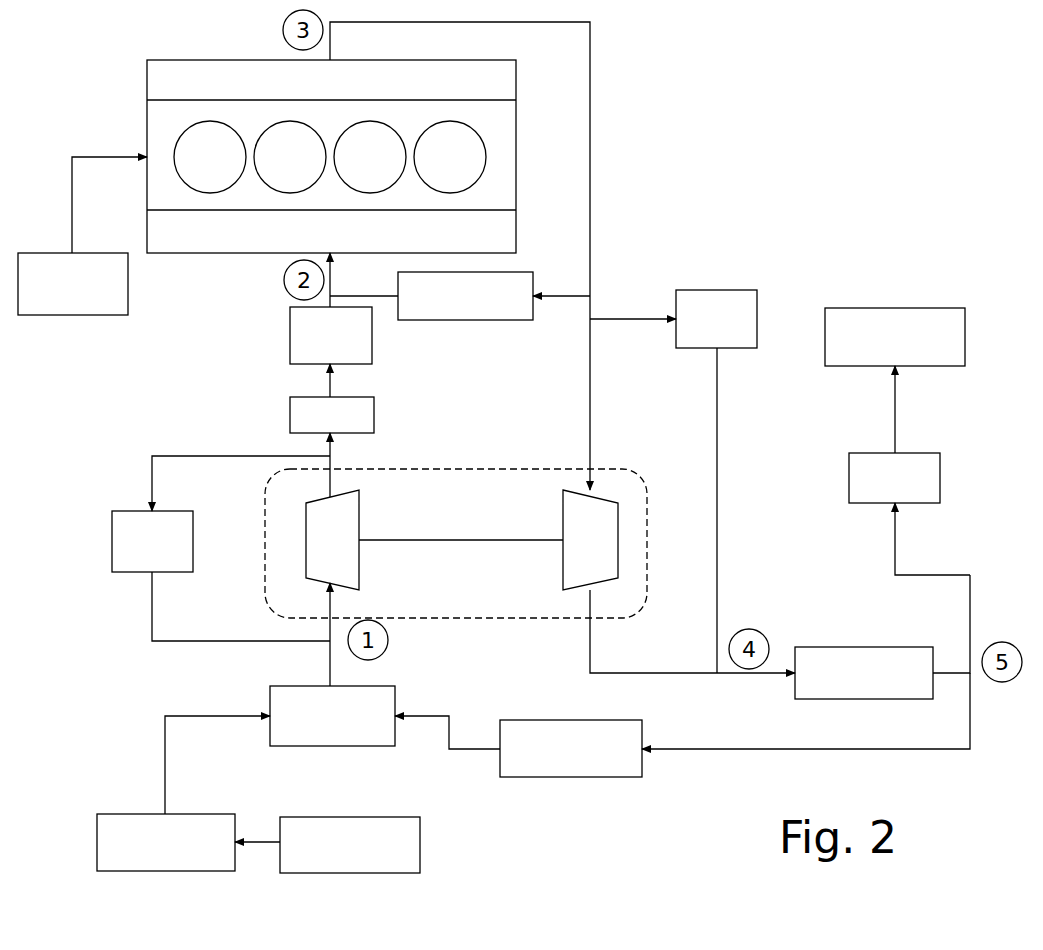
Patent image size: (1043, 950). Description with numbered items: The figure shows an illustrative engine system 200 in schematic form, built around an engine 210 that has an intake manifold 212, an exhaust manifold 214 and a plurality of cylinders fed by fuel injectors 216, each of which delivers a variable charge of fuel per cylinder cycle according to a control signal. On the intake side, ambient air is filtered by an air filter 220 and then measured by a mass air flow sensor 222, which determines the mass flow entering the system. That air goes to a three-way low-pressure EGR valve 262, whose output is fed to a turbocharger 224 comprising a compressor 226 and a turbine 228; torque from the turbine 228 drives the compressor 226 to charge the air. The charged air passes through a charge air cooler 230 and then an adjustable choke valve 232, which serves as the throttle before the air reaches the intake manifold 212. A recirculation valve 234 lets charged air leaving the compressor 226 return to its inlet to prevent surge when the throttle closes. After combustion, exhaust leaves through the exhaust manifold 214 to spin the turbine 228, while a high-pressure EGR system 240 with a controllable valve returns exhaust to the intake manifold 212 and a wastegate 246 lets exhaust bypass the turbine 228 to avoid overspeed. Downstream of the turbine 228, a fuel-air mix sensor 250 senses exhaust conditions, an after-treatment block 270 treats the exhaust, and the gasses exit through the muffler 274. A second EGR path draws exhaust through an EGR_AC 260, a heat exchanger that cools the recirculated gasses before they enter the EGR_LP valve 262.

The engine system 200 is at (640, 100).
The engine 210 is at (155, 120).
The intake manifold 212 is at (230, 245).
The exhaust manifold 214 is at (192, 63).
The fuel injector 216 is at (116, 316).
The air filter 220 is at (420, 838).
The mass air flow sensor 222 is at (143, 820).
The turbocharger 224 is at (456, 543).
The compressor 226 is at (352, 513).
The turbine 228 is at (600, 500).
The charge air cooler 230 is at (302, 412).
The adjustable choke valve 232 is at (302, 338).
The recirculation valve 234 is at (132, 520).
The high-pressure exhaust gas recirculation system 240 is at (453, 313).
The wastegate 246 is at (718, 293).
The fuel-air mix sensor 250 is at (837, 648).
The EGR_AC 260 is at (580, 787).
The low-pressure EGR valve 262 is at (320, 738).
The after-treatment block 270 is at (858, 480).
The muffler 274 is at (877, 315).